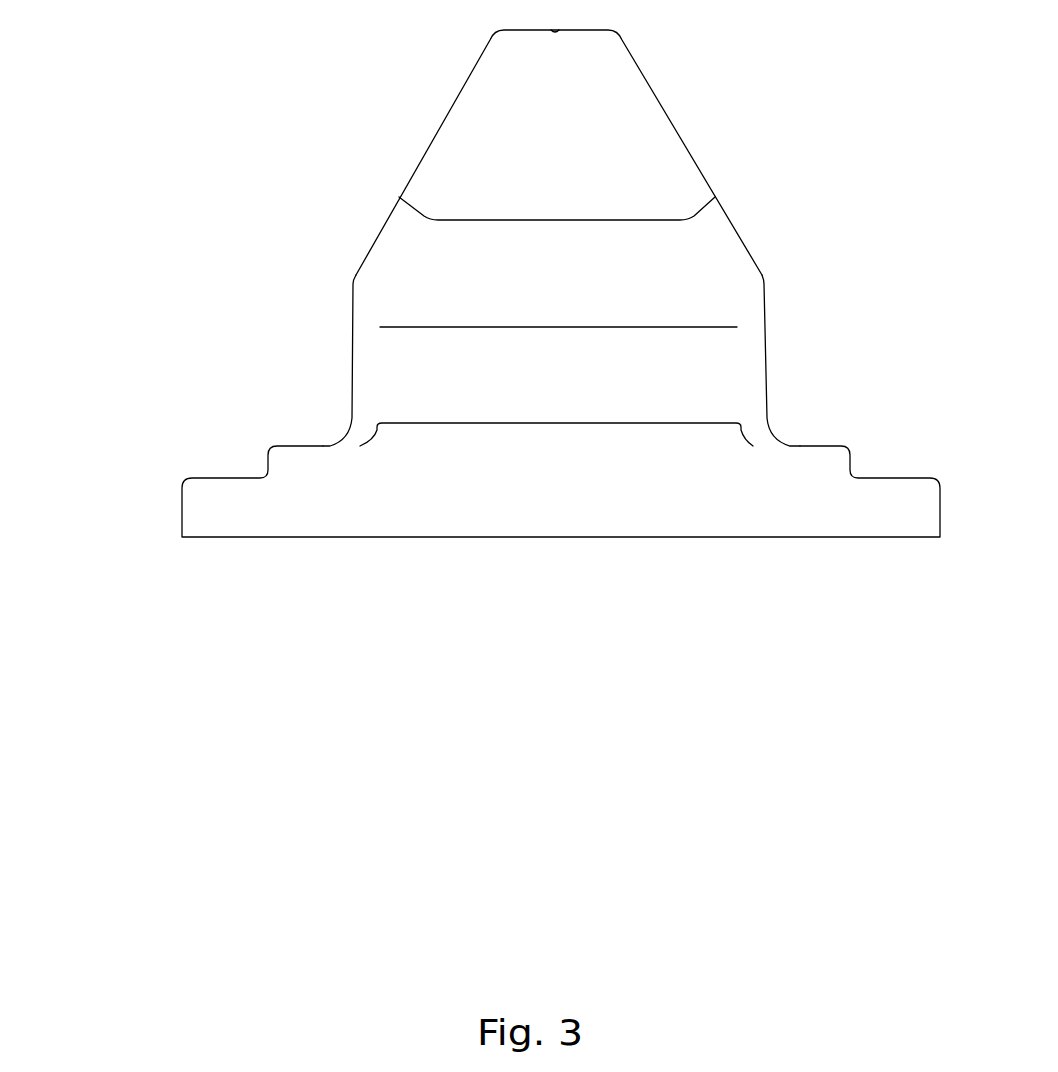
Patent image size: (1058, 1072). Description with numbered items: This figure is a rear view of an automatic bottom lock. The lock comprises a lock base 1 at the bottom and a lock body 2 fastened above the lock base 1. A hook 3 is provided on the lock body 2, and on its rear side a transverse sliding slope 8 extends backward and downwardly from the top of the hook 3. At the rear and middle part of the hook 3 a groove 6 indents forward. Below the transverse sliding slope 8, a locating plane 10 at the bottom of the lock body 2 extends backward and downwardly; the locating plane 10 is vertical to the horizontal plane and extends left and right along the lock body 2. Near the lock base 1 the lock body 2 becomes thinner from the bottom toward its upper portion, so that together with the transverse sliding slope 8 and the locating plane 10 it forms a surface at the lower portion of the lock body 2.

The lock base 1 is at (494, 495).
The lock body 2 is at (424, 360).
The hook 3 is at (405, 152).
The groove 6 is at (666, 157).
The transverse sliding slope 8 is at (656, 321).
The locating plane 10 is at (650, 399).